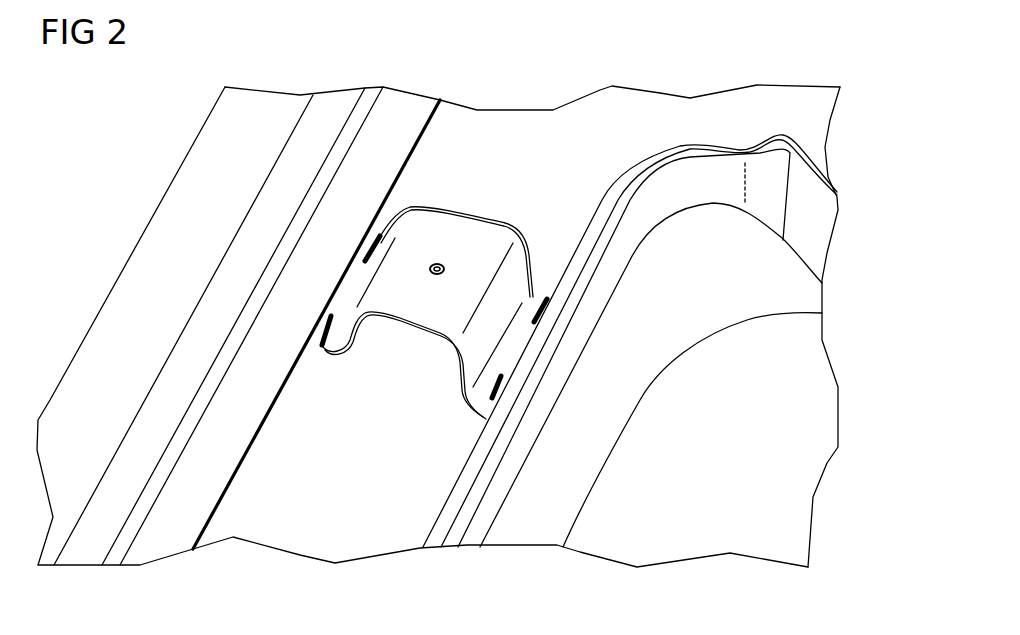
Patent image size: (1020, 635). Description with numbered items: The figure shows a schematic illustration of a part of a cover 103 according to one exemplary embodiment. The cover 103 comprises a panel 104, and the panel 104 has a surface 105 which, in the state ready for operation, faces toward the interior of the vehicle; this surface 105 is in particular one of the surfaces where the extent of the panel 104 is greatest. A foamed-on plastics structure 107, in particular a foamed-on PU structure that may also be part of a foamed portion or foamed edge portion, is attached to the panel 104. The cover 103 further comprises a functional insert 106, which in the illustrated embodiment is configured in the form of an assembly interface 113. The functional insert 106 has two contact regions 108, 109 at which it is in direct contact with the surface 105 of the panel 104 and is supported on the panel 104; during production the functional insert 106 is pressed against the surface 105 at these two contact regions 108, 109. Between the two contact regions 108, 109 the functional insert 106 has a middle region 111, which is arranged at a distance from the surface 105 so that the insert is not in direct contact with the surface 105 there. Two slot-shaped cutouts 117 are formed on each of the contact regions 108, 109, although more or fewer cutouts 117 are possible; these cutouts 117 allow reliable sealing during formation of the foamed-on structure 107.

The cover 103 is at (780, 408).
The panel 104 is at (376, 538).
The surface 105 is at (320, 504).
The functional insert 106 is at (500, 233).
The foamed-on plastics structure 107 is at (402, 108).
The contact region 108 is at (352, 283).
The contact region 109 is at (517, 352).
The middle region 111 is at (375, 305).
The assembly interface 113 is at (438, 263).
The cutouts 117 is at (381, 241).